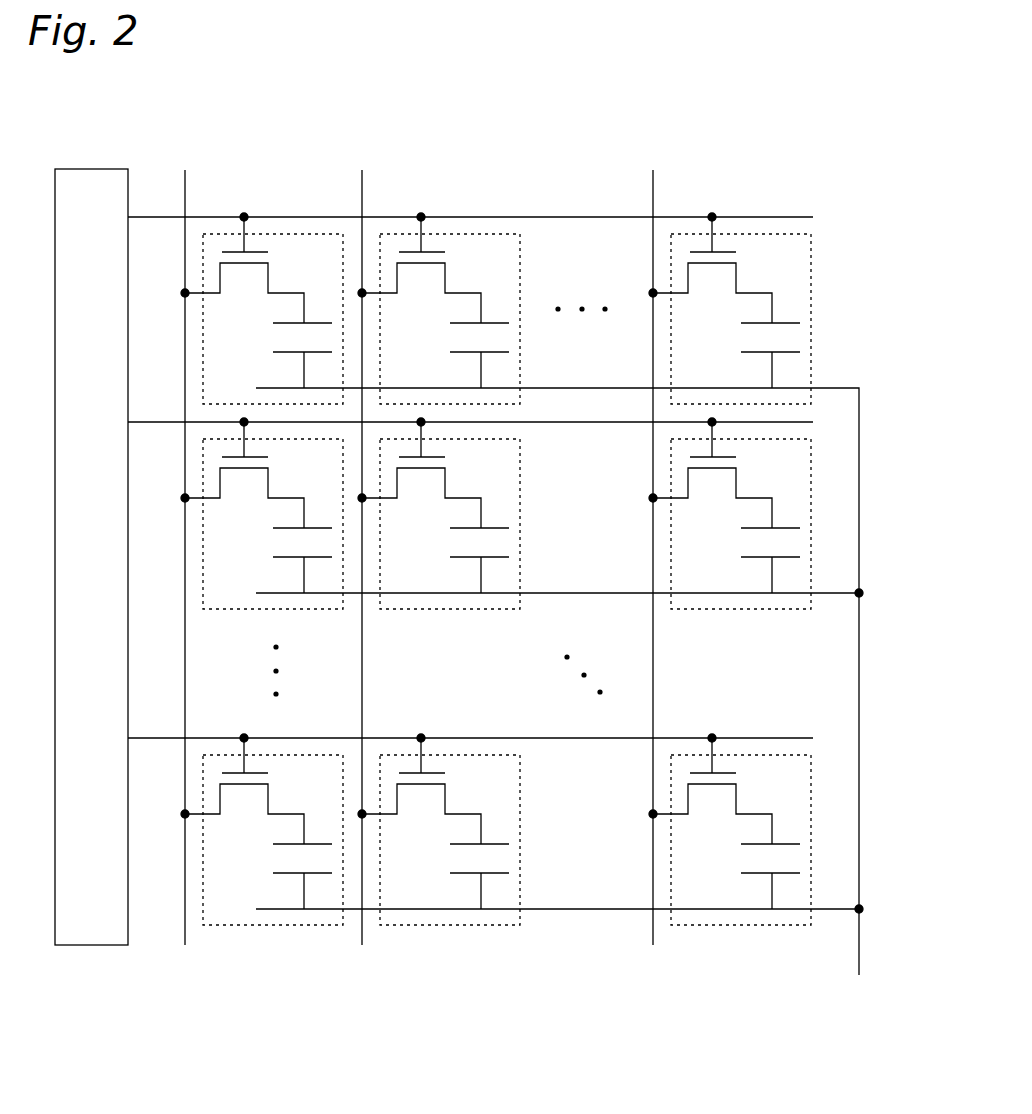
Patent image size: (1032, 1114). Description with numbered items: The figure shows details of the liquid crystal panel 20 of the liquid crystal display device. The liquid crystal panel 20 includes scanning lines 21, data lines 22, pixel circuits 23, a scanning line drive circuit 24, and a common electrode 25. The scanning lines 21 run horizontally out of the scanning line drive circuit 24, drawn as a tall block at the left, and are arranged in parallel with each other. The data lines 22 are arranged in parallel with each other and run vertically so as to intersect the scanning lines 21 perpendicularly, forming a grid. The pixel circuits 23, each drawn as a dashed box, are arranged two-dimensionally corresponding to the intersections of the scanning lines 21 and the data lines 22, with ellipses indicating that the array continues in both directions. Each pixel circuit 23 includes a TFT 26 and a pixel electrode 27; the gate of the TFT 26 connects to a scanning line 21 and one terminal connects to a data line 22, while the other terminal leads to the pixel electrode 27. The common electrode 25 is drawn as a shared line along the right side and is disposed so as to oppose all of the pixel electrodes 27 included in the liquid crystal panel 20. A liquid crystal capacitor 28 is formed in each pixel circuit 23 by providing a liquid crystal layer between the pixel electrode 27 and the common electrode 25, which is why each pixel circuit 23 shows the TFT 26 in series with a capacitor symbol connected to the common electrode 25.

The liquid crystal panel 20 is at (514, 174).
The scanning lines 21 is at (150, 418).
The data lines 22 is at (362, 193).
The pixel circuits 23 is at (450, 612).
The scanning line drive circuit 24 is at (92, 168).
The common electrode 25 is at (862, 481).
The TFT 26 is at (447, 483).
The pixel electrode 27 is at (498, 527).
The liquid crystal capacitor 28 is at (450, 545).